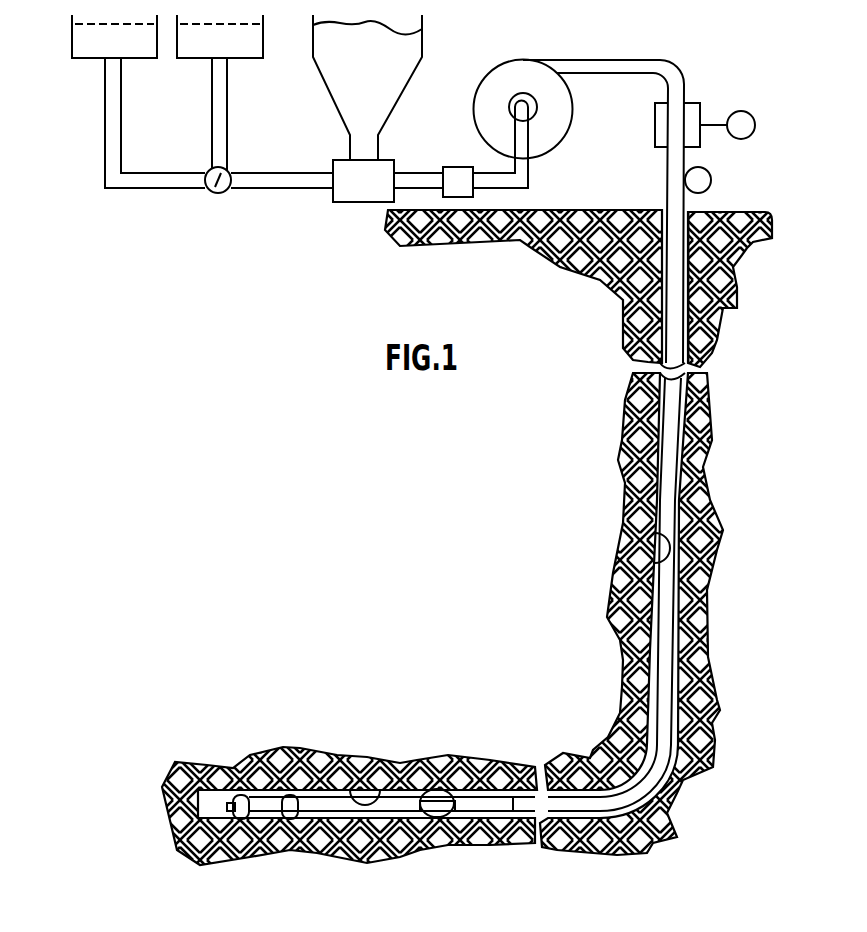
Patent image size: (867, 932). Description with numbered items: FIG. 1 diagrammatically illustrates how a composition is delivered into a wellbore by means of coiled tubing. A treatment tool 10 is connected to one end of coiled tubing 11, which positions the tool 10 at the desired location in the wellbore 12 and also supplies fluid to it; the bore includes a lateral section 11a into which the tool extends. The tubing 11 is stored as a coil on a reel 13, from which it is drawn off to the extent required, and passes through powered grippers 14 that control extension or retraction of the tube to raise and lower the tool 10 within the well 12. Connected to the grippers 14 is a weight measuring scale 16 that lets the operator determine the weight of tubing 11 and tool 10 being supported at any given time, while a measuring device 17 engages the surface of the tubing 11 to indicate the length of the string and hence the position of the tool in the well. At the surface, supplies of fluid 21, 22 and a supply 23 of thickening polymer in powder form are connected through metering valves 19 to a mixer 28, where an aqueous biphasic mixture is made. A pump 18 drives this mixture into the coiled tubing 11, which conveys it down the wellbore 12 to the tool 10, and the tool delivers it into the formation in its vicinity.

The treatment tool 10 is at (400, 807).
The coiled tubing 11 is at (673, 272).
The lateral wellbore section 11a is at (241, 924).
The wellbore 12 is at (650, 534).
The reel 13 is at (562, 115).
The powered grippers 14 is at (694, 112).
The weight measuring scale 16 is at (743, 120).
The measuring device 17 is at (703, 182).
The pump 18 is at (458, 178).
The metering valves 19 is at (212, 192).
The supply of fluid 21 is at (95, 45).
The supply of fluid 22 is at (198, 43).
The supply of thickening polymer 23 is at (398, 55).
The mixer 28 is at (348, 192).